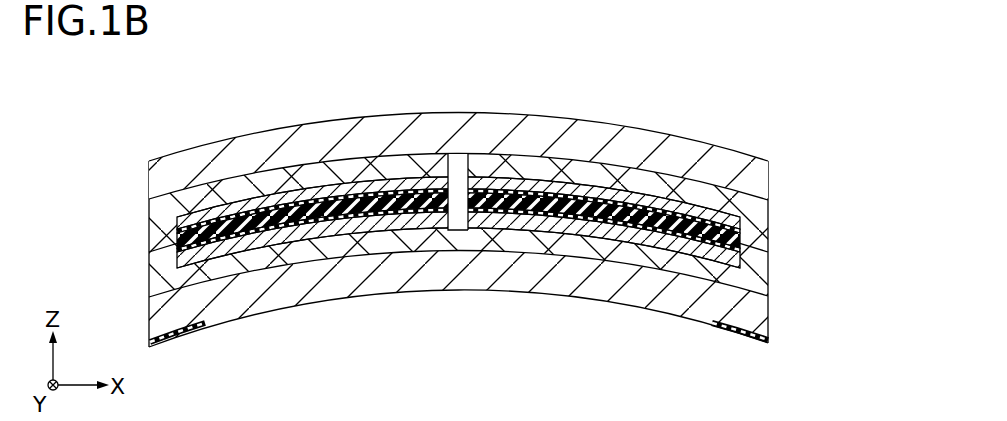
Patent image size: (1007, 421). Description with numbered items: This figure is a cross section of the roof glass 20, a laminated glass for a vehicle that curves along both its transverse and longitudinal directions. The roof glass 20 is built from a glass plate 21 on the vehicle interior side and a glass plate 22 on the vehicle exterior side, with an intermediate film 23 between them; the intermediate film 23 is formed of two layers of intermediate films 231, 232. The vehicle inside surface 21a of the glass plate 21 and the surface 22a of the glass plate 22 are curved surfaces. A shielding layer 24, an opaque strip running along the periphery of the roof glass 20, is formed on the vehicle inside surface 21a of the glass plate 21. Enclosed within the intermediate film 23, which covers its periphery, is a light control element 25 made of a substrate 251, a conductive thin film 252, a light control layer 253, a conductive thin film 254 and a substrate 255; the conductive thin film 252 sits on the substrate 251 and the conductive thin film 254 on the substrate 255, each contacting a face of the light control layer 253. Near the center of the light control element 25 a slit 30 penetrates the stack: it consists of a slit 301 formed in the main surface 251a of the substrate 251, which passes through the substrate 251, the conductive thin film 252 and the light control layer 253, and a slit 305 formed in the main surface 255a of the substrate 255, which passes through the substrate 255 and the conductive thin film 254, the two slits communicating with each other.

The roof glass 20 is at (95, 103).
The glass plate 21 is at (511, 313).
The vehicle inside surface 21a is at (603, 300).
The glass plate 22 is at (511, 147).
The vehicle inside surface 22a is at (220, 184).
The intermediate film 23 is at (513, 226).
The intermediate film 231 is at (757, 282).
The intermediate film 232 is at (757, 228).
The shielding layer 24 is at (757, 340).
The light control element 25 is at (458, 239).
The substrate 251 is at (458, 294).
The main surface 251a is at (535, 232).
The conductive thin film 252 is at (287, 227).
The light control layer 253 is at (343, 207).
The conductive thin film 254 is at (398, 193).
The substrate 255 is at (458, 218).
The main surface 255a is at (542, 177).
The slit 30 is at (458, 129).
The slit 301 is at (457, 205).
The slit 305 is at (470, 176).